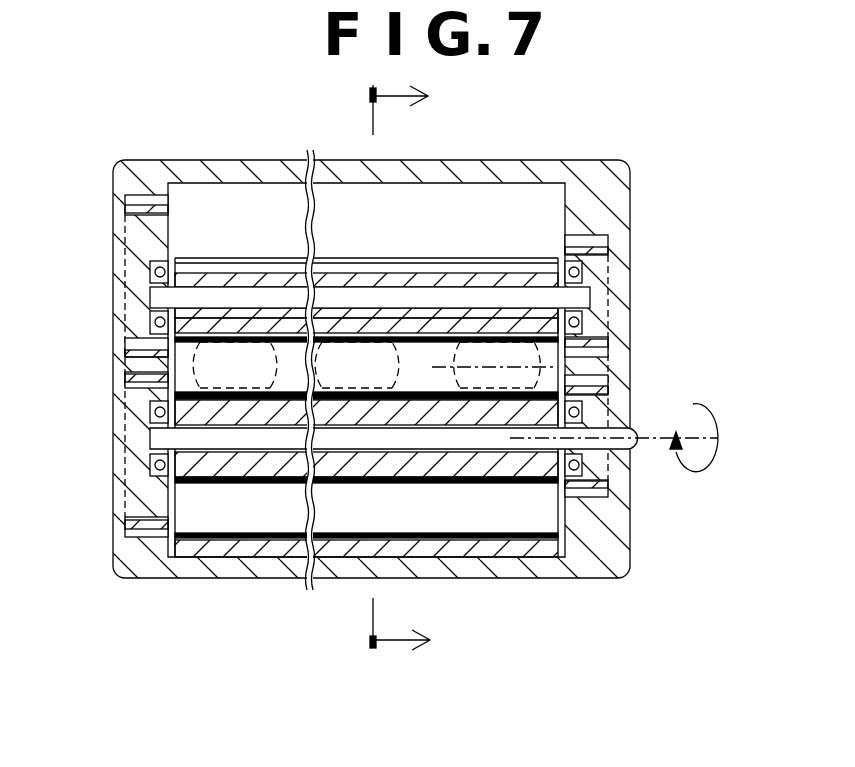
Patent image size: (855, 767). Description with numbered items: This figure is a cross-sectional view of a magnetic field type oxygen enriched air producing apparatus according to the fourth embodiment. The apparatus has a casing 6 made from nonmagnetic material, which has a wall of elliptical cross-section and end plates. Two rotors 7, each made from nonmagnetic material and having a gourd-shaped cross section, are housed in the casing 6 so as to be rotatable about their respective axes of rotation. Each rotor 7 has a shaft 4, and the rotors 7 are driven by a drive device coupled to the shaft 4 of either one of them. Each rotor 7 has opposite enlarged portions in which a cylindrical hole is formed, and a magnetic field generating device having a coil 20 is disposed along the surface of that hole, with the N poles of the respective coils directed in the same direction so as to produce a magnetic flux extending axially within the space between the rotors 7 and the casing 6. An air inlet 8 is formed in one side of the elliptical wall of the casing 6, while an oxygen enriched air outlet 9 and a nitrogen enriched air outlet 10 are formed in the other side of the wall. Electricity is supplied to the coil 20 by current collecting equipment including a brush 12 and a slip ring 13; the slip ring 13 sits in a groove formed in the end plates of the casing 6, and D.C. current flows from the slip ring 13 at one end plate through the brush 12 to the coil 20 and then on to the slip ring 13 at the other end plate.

The shaft 4 is at (578, 296).
The casing 6 is at (213, 161).
The rotor 7 is at (527, 282).
The air inlet 8 is at (417, 367).
The oxygen enriched air outlet 9 is at (152, 420).
The nitrogen enriched air outlet 10 is at (357, 330).
The brush 12 is at (158, 343).
The slip ring 13 is at (125, 212).
The coil 20 is at (158, 393).